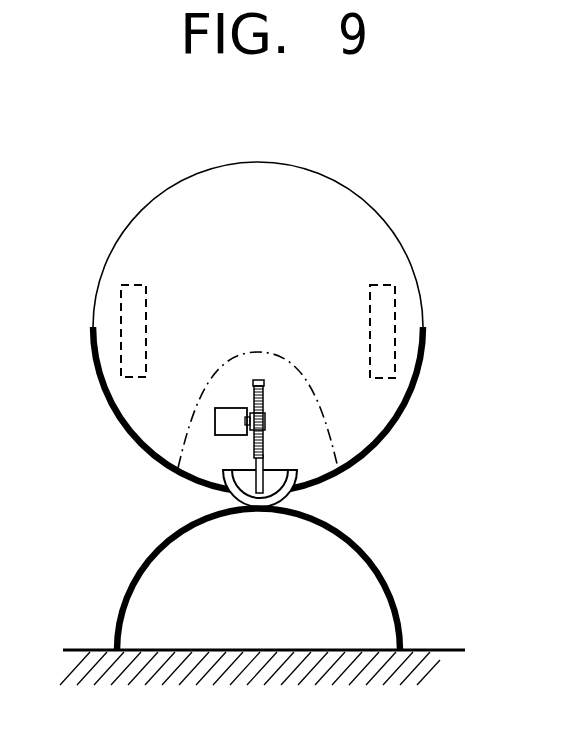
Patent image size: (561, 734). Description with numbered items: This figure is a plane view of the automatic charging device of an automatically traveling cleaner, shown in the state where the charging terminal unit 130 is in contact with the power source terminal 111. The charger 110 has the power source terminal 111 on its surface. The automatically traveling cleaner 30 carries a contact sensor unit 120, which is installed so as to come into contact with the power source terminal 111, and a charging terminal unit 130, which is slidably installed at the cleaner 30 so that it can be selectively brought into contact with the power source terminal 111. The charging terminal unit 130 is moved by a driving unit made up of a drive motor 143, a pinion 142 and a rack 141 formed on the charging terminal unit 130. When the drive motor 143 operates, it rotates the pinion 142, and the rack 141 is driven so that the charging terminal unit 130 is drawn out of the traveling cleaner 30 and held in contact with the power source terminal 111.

The automatically traveling cleaner 30 is at (396, 218).
The contact sensor unit 120 is at (408, 400).
The charging terminal unit 130 is at (229, 494).
The rack 141 is at (255, 450).
The pinion 142 is at (264, 428).
The drive motor 143 is at (222, 418).
The charger 110 is at (372, 600).
The power source terminal 111 is at (360, 547).